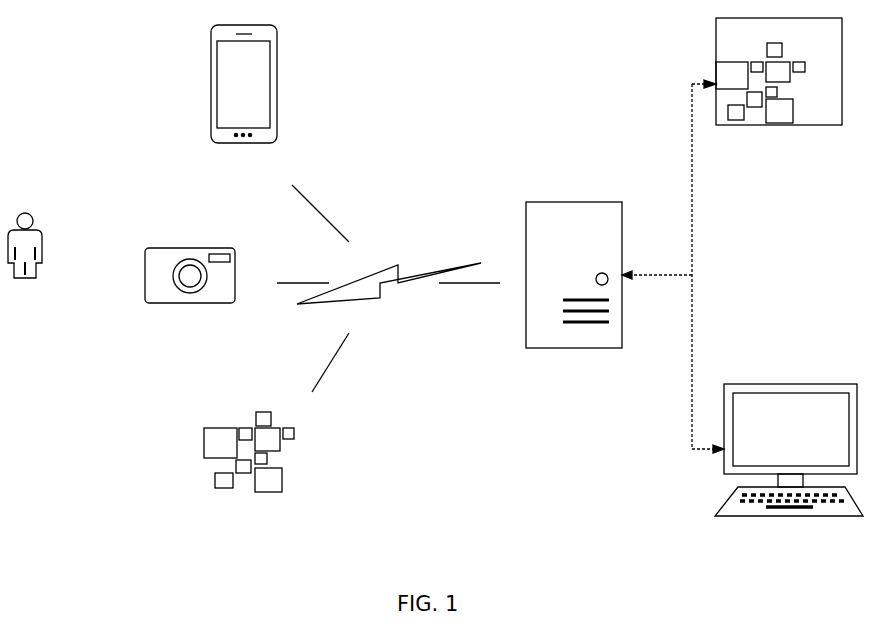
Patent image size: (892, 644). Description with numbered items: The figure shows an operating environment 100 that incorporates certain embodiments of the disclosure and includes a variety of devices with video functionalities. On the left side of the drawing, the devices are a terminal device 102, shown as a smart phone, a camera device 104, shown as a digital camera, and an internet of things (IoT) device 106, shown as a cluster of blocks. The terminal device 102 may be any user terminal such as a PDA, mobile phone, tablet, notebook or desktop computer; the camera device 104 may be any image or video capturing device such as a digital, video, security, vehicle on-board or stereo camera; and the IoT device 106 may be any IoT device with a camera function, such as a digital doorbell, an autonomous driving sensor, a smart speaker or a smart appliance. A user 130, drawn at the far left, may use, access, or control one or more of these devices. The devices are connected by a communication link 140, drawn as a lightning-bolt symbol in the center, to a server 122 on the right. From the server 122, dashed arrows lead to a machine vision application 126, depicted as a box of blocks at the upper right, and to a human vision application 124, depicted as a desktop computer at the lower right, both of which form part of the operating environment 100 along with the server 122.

The operating environment 100 is at (97, 47).
The terminal device 102 is at (263, 176).
The camera device 104 is at (208, 353).
The internet of things (IoT) device 106 is at (269, 525).
The server 122 is at (594, 383).
The human vision application 124 is at (809, 557).
The machine vision application 126 is at (780, 157).
The user 130 is at (44, 310).
The communication link 140 is at (403, 293).